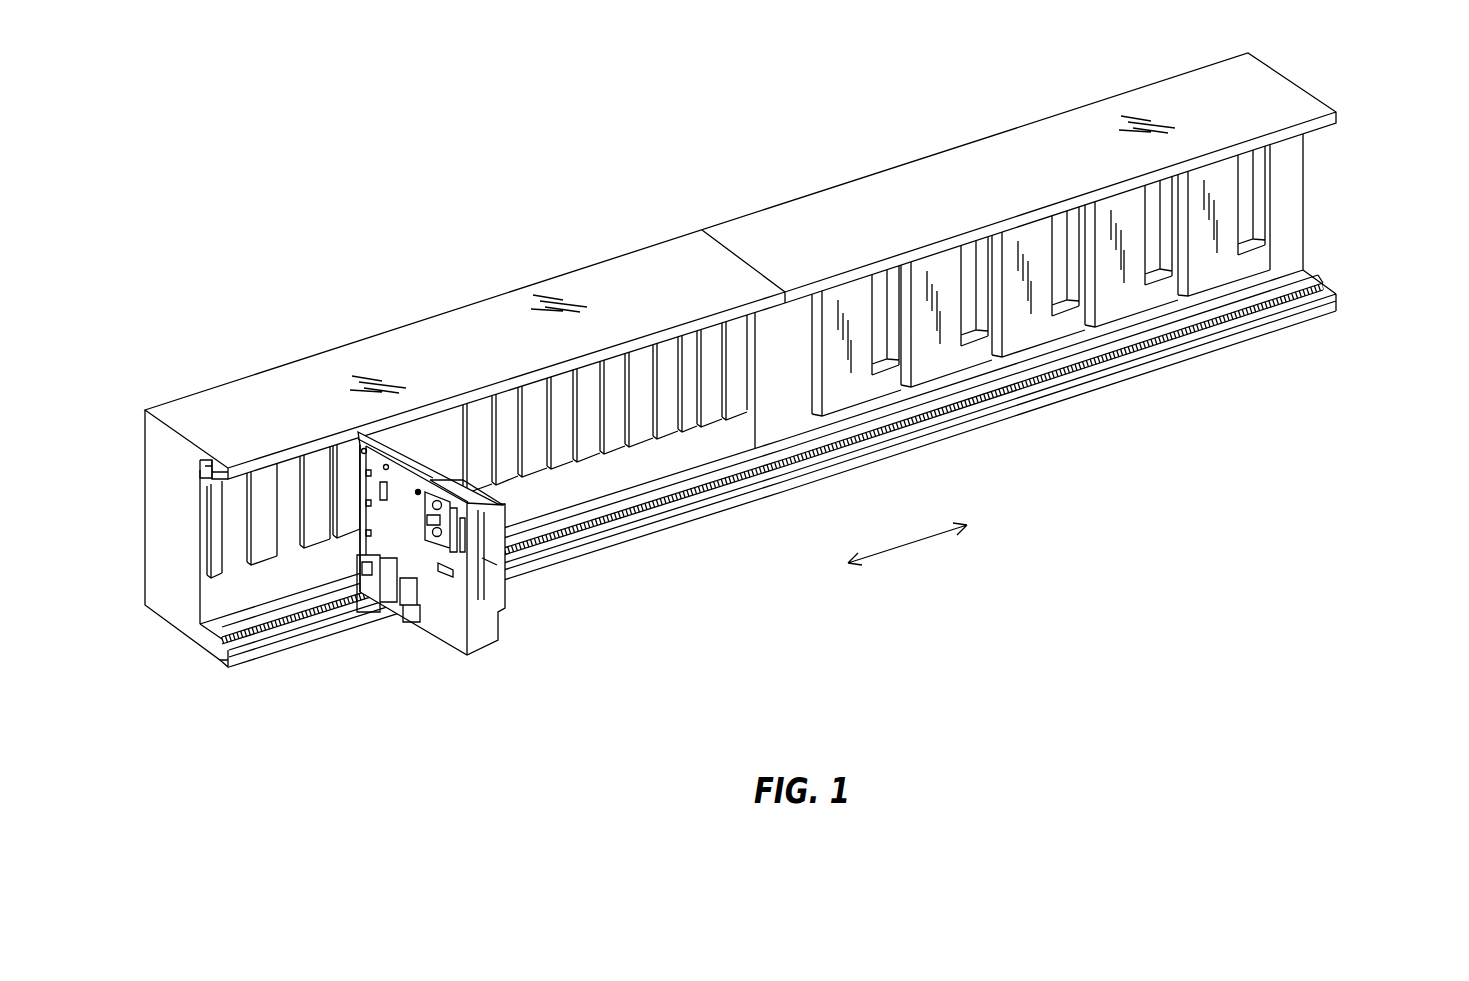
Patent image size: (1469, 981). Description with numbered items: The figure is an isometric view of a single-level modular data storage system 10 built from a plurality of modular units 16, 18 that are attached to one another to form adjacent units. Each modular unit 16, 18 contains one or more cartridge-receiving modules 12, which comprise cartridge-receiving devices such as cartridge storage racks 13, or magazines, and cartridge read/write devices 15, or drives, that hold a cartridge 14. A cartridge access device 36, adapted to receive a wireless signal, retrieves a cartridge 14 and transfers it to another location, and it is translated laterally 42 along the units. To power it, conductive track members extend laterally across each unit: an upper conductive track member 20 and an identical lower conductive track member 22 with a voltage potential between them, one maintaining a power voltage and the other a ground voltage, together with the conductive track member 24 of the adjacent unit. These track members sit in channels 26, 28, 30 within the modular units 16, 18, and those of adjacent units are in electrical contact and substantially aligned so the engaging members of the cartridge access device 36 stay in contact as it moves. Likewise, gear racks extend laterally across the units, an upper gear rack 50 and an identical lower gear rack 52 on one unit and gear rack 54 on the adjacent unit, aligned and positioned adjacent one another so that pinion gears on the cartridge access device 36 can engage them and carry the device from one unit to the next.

The single-level modular data storage system 10 is at (381, 184).
The cartridge-receiving module 12 is at (750, 372).
The cartridge storage rack 13 is at (733, 340).
The cartridge 14 is at (233, 535).
The cartridge read/write device 15 is at (962, 352).
The modular unit 16 is at (421, 315).
The modular unit 18 is at (1026, 279).
The upper conductive track member 20 is at (241, 437).
The channel 26 is at (227, 467).
The lower conductive track member 22 is at (748, 509).
The channel 28 is at (220, 661).
The conductive track member 24 is at (823, 432).
The channel 30 is at (1332, 290).
The cartridge access device 36 is at (503, 656).
The lateral translation 42 is at (907, 546).
The upper gear rack 50 is at (205, 478).
The lower gear rack 52 is at (205, 644).
The gear rack 54 is at (1324, 280).